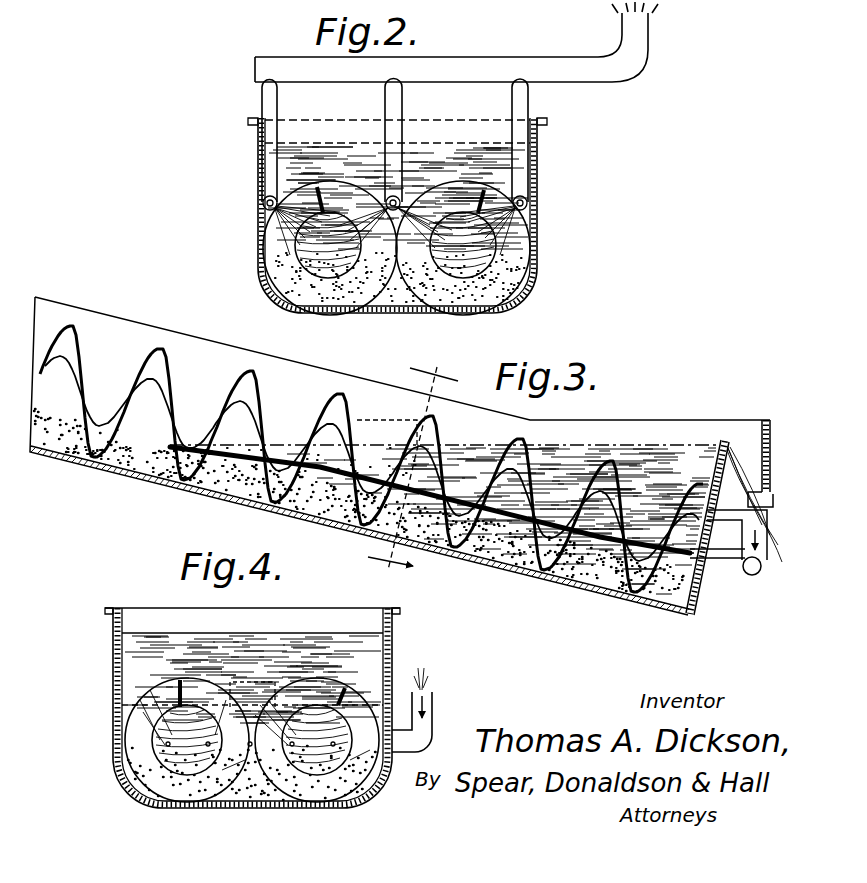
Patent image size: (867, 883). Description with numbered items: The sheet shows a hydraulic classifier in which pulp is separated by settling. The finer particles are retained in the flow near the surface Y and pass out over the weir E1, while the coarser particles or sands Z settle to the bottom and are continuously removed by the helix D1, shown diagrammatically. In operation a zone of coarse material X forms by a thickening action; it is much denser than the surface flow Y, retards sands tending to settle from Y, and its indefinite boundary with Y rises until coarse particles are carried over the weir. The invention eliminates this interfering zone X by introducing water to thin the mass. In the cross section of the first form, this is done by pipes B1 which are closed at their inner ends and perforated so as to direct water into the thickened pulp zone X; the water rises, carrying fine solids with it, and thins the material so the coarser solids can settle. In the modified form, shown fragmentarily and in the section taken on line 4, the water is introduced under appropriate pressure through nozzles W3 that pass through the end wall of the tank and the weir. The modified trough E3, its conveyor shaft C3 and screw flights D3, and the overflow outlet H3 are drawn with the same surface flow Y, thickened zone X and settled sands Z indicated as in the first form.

In FIG. 2, the pipes B1 is at (265, 105).
In FIG. 2, the weir E1 is at (325, 143).
In FIG. 2, the helix D1 is at (260, 234).
In FIG. 3, the screw conveyor flights D3 is at (160, 352).
In FIG. 4, the screw conveyor flights D3 is at (370, 690).
In FIG. 3, the conveyor shaft C3 is at (390, 419).
In FIG. 3, the section line 4— 4 is at (413, 469).
In FIG. 3, the trough tank E3 is at (725, 443).
In FIG. 4, the trough tank E3 is at (172, 633).
In FIG. 3, the overflow outlet H3 is at (762, 493).
In FIG. 3, the nozzles W3 is at (720, 562).
In FIG. 4, the nozzles W3 is at (434, 712).
In FIG. 2, the flow near the surface Y is at (398, 197).
In FIG. 3, the flow near the surface Y is at (459, 521).
In FIG. 4, the flow near the surface Y is at (253, 678).
In FIG. 2, the zone of coarse material X is at (395, 245).
In FIG. 3, the zone of coarse material X is at (645, 520).
In FIG. 4, the zone of coarse material X is at (262, 740).
In FIG. 2, the coarser particles or sands Z is at (400, 279).
In FIG. 3, the coarser particles or sands Z is at (359, 500).
In FIG. 4, the coarser particles or sands Z is at (252, 773).